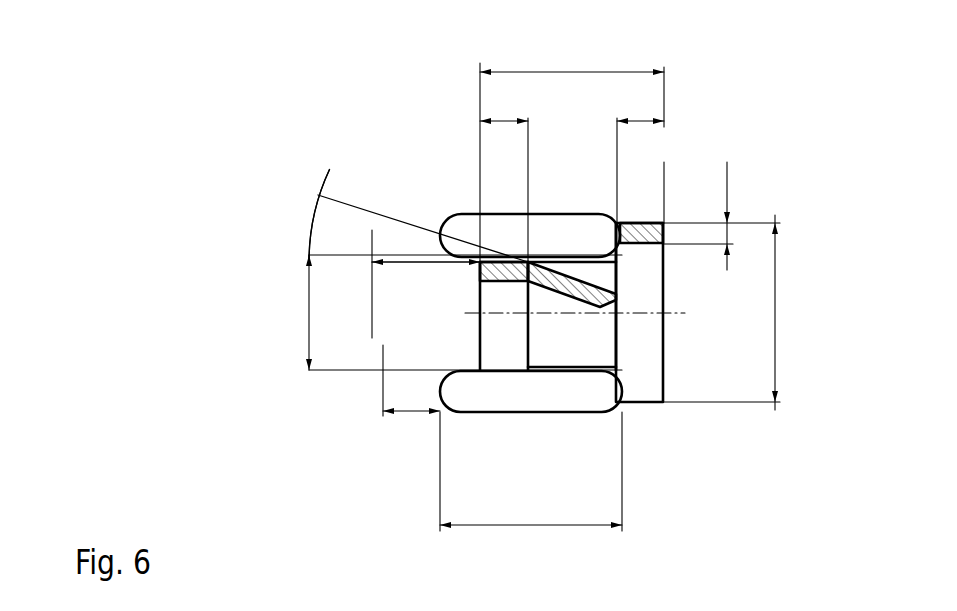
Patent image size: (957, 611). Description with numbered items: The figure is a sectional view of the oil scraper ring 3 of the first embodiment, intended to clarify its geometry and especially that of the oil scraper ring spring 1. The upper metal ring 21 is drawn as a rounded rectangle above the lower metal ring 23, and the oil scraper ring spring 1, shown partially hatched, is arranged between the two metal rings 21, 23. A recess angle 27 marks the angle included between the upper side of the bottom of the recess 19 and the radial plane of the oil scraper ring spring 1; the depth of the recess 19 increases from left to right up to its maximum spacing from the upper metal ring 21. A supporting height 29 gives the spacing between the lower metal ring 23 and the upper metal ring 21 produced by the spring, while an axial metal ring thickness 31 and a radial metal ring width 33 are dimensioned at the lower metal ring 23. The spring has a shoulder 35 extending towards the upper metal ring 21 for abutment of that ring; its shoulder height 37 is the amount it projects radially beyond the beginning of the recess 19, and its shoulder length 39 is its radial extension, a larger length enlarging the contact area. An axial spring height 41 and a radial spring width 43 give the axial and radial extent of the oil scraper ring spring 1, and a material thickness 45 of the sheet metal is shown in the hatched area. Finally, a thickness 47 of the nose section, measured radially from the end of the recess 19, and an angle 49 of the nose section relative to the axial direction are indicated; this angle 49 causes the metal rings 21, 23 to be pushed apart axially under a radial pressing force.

The oil scraper ring spring 1 is at (694, 174).
The oil scraper ring 3 is at (301, 125).
The recess 19 is at (596, 308).
The upper metal ring 21 is at (460, 224).
The lower metal ring 23 is at (475, 392).
The recess angle 27 is at (312, 228).
The supporting height 29 is at (308, 300).
The axial metal ring thickness 31 is at (381, 390).
The radial metal ring width 33 is at (522, 523).
The shoulder 35 is at (515, 262).
The shoulder height 37 is at (372, 302).
The shoulder length 39 is at (505, 120).
The axial spring height 41 is at (775, 270).
The radial spring width 43 is at (583, 70).
The material thickness 45 is at (728, 193).
The thickness of the nose section 47 is at (642, 120).
The angle of the nose section 49 is at (628, 220).